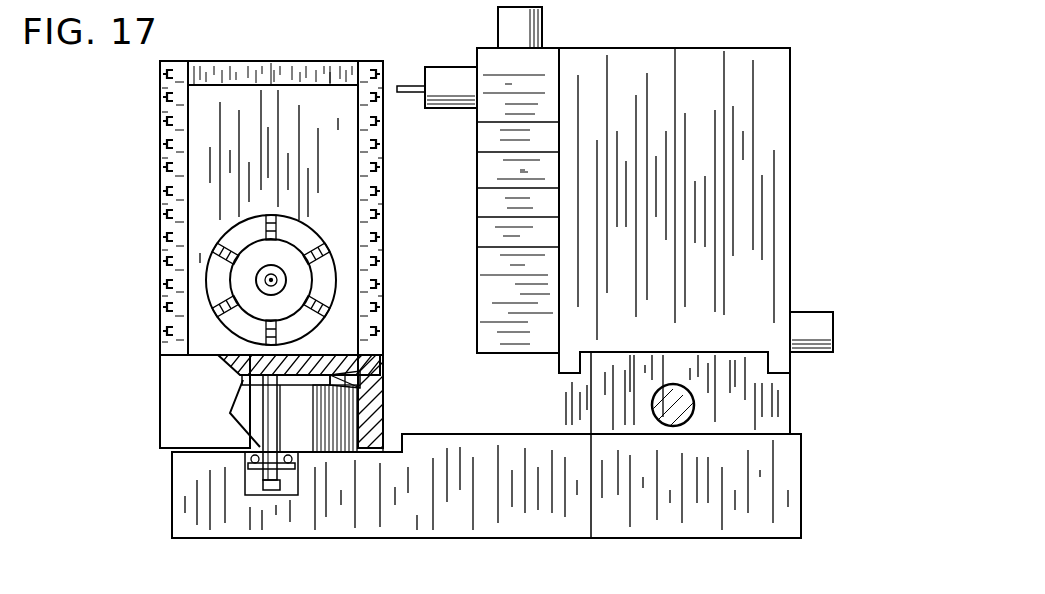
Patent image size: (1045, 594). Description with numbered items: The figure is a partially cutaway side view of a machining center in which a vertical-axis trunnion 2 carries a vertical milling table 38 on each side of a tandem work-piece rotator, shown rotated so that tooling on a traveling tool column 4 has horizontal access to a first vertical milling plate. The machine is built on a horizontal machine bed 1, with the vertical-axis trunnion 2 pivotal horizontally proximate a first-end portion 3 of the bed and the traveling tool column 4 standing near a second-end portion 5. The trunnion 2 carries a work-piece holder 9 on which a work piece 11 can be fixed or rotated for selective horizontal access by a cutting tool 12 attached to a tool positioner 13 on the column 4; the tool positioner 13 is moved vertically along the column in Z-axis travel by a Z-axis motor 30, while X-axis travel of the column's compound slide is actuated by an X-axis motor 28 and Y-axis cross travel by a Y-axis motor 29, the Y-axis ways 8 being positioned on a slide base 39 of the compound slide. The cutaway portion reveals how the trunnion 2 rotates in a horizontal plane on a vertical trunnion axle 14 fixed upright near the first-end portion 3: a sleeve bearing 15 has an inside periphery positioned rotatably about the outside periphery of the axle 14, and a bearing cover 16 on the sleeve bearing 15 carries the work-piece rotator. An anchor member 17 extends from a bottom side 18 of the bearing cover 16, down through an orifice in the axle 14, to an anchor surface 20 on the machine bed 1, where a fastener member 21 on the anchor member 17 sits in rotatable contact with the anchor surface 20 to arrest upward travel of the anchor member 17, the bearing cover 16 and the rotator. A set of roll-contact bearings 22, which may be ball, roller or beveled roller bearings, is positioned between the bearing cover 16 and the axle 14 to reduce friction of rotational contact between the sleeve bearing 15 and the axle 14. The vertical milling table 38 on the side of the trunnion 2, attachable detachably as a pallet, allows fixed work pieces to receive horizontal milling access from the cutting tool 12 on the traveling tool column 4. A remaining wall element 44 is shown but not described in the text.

The horizontal machine bed 1 is at (134, 493).
The vertical-axis trunnion 2 is at (138, 389).
The first-end portion 3 is at (170, 477).
The traveling tool column 4 is at (490, 156).
The second-end portion 5 is at (805, 487).
The Y-axis ways 8 is at (828, 42).
The work-piece holder 9 is at (225, 248).
The work piece 11 is at (235, 282).
The cutting tool 12 is at (406, 86).
The tool positioner 13 is at (452, 72).
The vertical trunnion axle 14 is at (310, 424).
The sleeve bearing 15 is at (372, 400).
The bearing cover 16 is at (300, 362).
The anchor member 17 is at (268, 408).
The bottom side 18 is at (242, 376).
The anchor surface 20 is at (243, 428).
The fastener member 21 is at (266, 487).
The roll-contact bearings 22 is at (360, 368).
The X-axis motor 28 is at (690, 410).
The Y-axis motor 29 is at (806, 338).
The Z-axis motor 30 is at (530, 24).
The vertical milling table 38 is at (160, 158).
The slide base 39 is at (735, 382).
The side wall 44 is at (386, 206).